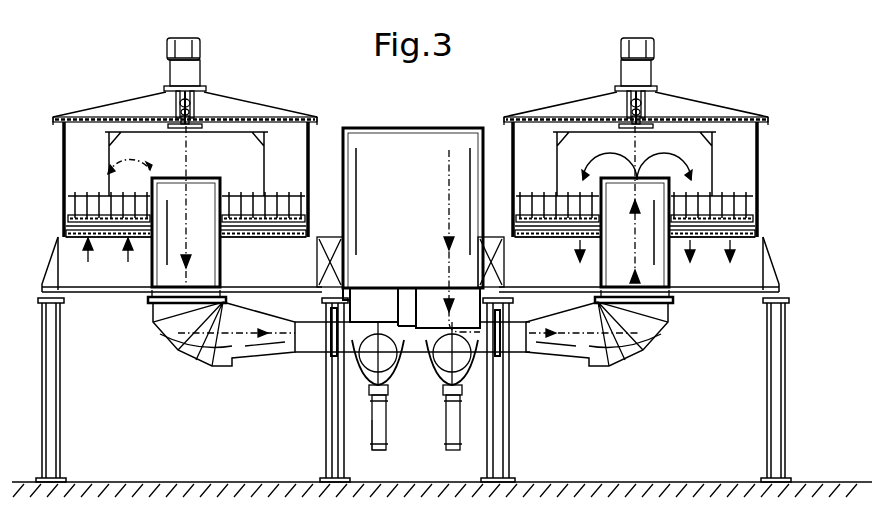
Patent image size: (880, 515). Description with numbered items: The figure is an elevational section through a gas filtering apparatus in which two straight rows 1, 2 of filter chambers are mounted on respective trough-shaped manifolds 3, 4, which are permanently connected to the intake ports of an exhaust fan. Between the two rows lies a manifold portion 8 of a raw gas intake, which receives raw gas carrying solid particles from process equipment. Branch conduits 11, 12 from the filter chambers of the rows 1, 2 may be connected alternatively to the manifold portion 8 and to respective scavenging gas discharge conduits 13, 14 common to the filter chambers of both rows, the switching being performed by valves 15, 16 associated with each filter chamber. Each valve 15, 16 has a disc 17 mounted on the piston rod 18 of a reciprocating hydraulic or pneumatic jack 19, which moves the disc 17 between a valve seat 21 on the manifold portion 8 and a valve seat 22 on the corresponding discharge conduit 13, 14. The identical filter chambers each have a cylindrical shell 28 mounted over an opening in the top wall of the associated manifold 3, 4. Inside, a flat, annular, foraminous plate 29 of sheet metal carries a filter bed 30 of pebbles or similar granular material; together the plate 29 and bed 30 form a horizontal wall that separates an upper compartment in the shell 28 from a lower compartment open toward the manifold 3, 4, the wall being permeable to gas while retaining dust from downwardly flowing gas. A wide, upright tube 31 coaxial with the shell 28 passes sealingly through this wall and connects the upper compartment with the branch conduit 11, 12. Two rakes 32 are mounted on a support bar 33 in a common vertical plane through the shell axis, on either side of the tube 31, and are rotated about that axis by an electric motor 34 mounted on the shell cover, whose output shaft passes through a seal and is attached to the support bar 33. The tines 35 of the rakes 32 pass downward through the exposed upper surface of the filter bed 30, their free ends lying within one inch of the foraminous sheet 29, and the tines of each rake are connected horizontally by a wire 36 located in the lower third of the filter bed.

The row of filter chambers 1 is at (240, 97).
The row of filter chambers 2 is at (570, 97).
The trough-shaped manifold 3 is at (76, 270).
The trough-shaped manifold 4 is at (709, 272).
The manifold portion of raw gas intake 8 is at (407, 128).
The branch conduit 11 is at (200, 350).
The branch conduit 12 is at (634, 354).
The scavenging gas discharge conduit 13 is at (370, 394).
The scavenging gas discharge conduit 14 is at (462, 396).
The valve 15 is at (396, 302).
The valve 16 is at (455, 378).
The disc 17 is at (360, 318).
The piston rod 18 is at (385, 372).
The reciprocating hydraulic or pneumatic jack 19 is at (374, 440).
The valve seat 21 is at (348, 298).
The valve seat 22 is at (413, 366).
The cylindrical shell 28 is at (309, 178).
The foraminous plate 29 is at (253, 246).
The filter bed 30 is at (308, 222).
The upright tube 31 is at (156, 286).
The rake 32 is at (108, 192).
The support bar 33 is at (160, 130).
The electric motor 34 is at (200, 75).
The tines 35 is at (116, 244).
The wire 36 is at (276, 236).